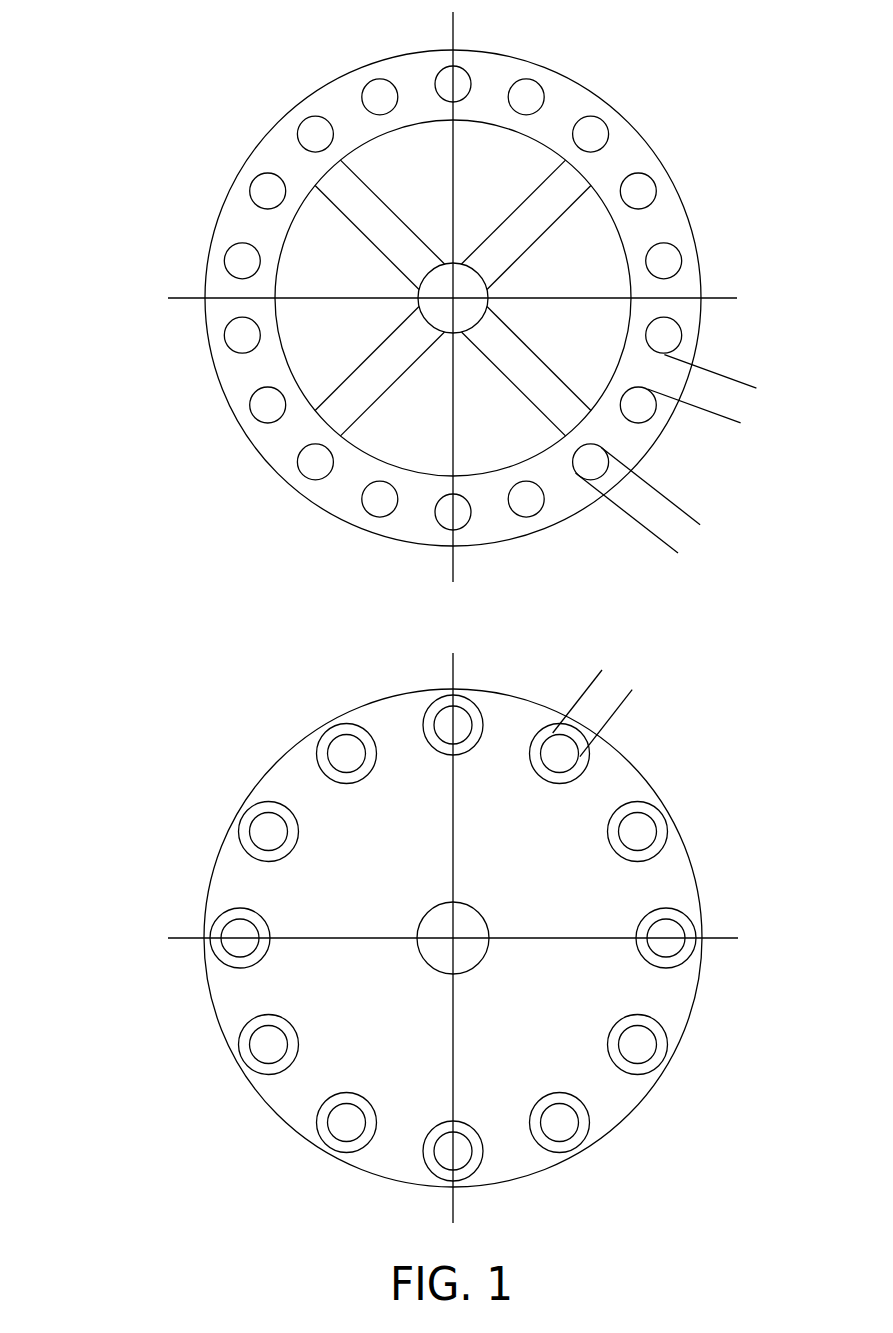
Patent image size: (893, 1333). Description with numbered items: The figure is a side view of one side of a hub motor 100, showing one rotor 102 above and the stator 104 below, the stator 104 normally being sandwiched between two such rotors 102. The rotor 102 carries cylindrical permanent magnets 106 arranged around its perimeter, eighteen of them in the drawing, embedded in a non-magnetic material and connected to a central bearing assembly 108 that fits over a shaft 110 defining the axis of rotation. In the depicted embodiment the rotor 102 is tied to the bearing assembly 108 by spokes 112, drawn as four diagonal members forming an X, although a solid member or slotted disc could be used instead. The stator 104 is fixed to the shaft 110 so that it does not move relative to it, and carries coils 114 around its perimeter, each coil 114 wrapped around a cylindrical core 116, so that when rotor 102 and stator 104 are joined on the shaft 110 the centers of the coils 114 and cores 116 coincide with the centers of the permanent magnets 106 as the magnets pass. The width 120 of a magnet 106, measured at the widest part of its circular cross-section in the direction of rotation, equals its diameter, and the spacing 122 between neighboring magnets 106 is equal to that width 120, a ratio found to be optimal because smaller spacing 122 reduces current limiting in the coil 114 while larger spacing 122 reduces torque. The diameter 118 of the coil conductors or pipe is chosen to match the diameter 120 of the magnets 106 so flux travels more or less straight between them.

The hub motor 100 is at (122, 50).
The rotor 102 is at (268, 132).
The stator 104 is at (214, 868).
The permanent magnets 106 is at (252, 187).
The bearing assembly 108 is at (410, 300).
The shaft 110 is at (480, 913).
The spokes 112 is at (537, 190).
The coils 114 is at (318, 753).
The core 116 is at (345, 735).
The diameter 118 is at (571, 674).
The width 120 is at (703, 495).
The spacing 122 is at (755, 361).